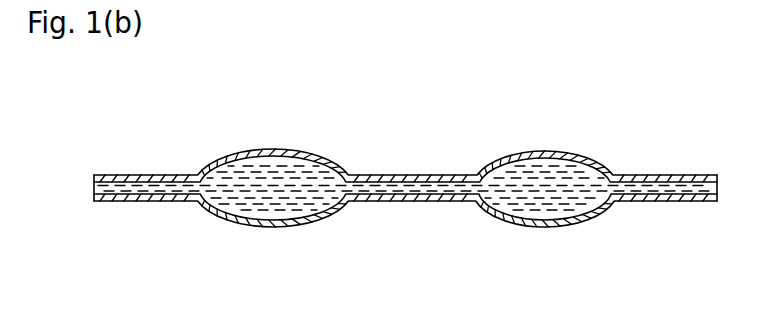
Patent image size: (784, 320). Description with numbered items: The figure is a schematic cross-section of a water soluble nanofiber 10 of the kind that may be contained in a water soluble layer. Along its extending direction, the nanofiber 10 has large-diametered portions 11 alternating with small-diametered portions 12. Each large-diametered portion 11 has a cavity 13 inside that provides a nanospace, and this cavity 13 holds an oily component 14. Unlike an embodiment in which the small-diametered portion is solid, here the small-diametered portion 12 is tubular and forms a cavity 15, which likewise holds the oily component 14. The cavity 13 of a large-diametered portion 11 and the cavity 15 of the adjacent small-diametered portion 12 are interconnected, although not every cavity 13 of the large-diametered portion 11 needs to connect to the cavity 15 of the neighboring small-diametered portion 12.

The nanofiber 10 is at (637, 79).
The large-diametered portion 11 is at (302, 149).
The small-diametered portion 12 is at (411, 176).
The cavity 13 is at (272, 198).
The oily component 14 is at (403, 192).
The cavity 15 is at (139, 191).